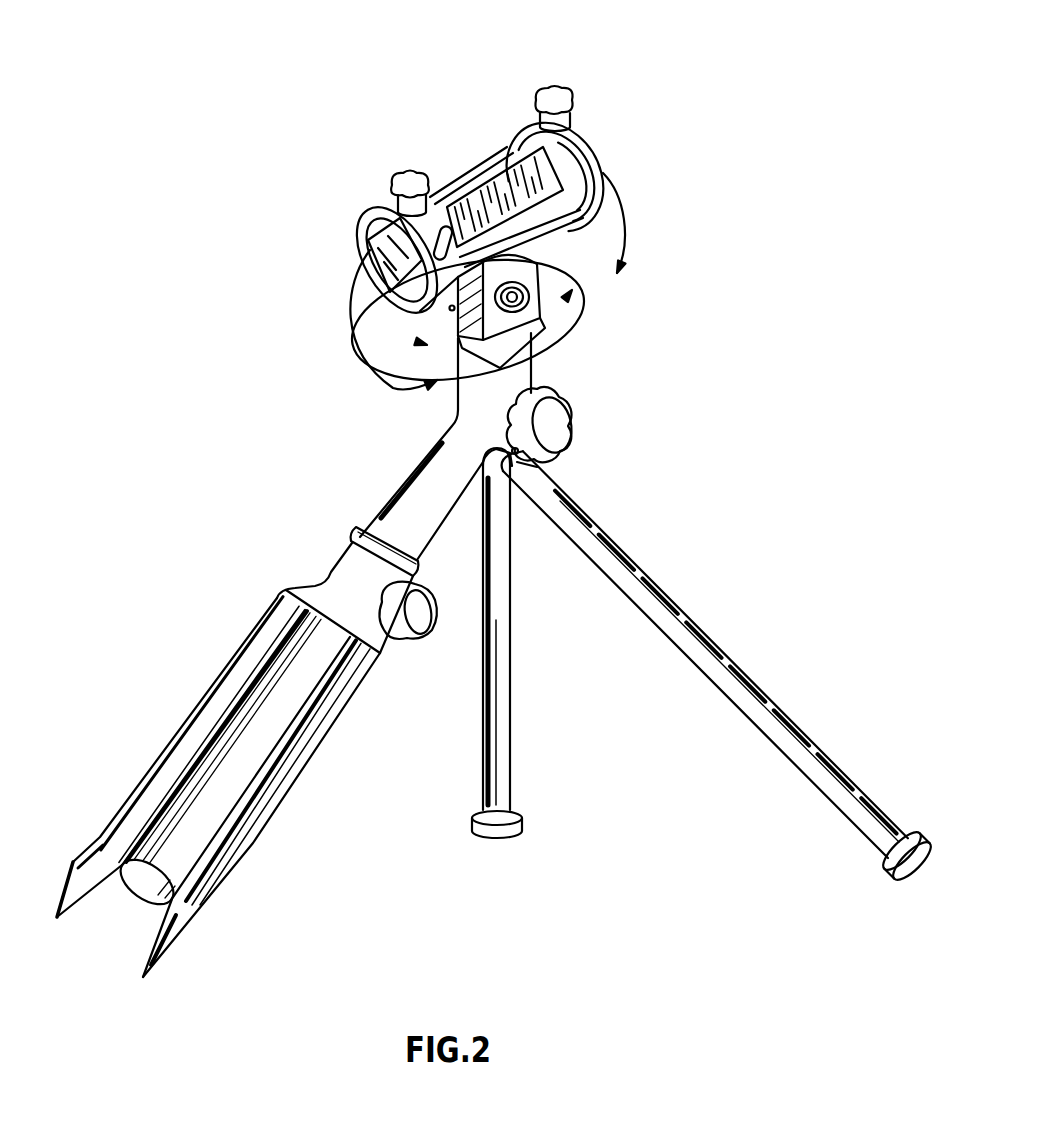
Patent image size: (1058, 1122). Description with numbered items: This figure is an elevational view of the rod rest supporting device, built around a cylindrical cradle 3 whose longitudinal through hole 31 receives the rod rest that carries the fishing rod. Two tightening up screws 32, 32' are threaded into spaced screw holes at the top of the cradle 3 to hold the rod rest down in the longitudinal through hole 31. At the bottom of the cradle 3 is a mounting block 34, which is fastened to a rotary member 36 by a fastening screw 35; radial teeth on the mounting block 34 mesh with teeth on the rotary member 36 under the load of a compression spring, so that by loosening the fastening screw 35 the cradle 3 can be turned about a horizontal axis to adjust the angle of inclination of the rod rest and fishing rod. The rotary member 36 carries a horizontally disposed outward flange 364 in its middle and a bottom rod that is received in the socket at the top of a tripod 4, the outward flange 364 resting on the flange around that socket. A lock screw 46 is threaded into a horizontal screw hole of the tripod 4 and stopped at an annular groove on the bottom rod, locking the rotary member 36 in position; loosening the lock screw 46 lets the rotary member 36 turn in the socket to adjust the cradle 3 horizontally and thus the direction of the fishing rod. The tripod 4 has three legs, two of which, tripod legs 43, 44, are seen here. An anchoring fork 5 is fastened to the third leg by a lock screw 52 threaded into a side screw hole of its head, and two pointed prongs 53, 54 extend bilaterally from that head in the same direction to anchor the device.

The cradle 3 is at (600, 175).
The longitudinal through hole 31 is at (387, 262).
The tightening up screw 32 is at (574, 77).
The tightening up screw 32' is at (420, 155).
The mounting block 34 is at (450, 310).
The fastening screw 35 is at (513, 297).
The rotary member 36 is at (520, 268).
The outward flange 364 is at (542, 343).
The tripod 4 is at (520, 384).
The tripod leg 43 is at (700, 646).
The tripod leg 44 is at (504, 680).
The lock screw 46 is at (553, 433).
The anchoring fork 5 is at (313, 760).
The lock screw 52 is at (423, 645).
The pointed prong 53 is at (207, 907).
The pointed prong 54 is at (87, 857).